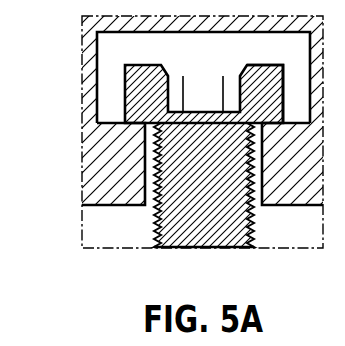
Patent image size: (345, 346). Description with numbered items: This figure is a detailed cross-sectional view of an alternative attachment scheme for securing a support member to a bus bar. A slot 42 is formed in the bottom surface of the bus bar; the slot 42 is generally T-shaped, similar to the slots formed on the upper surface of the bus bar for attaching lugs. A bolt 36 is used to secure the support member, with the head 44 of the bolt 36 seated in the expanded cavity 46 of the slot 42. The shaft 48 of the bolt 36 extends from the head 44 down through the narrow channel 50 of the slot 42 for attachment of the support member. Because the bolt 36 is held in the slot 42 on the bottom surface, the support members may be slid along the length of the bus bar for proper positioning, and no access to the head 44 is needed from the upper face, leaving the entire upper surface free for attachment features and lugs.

The bolt 36 is at (124, 90).
The slot 42 is at (152, 206).
The head 44 is at (260, 65).
The expanded cavity 46 is at (203, 77).
The shaft 48 is at (157, 153).
The narrow channel 50 is at (257, 198).